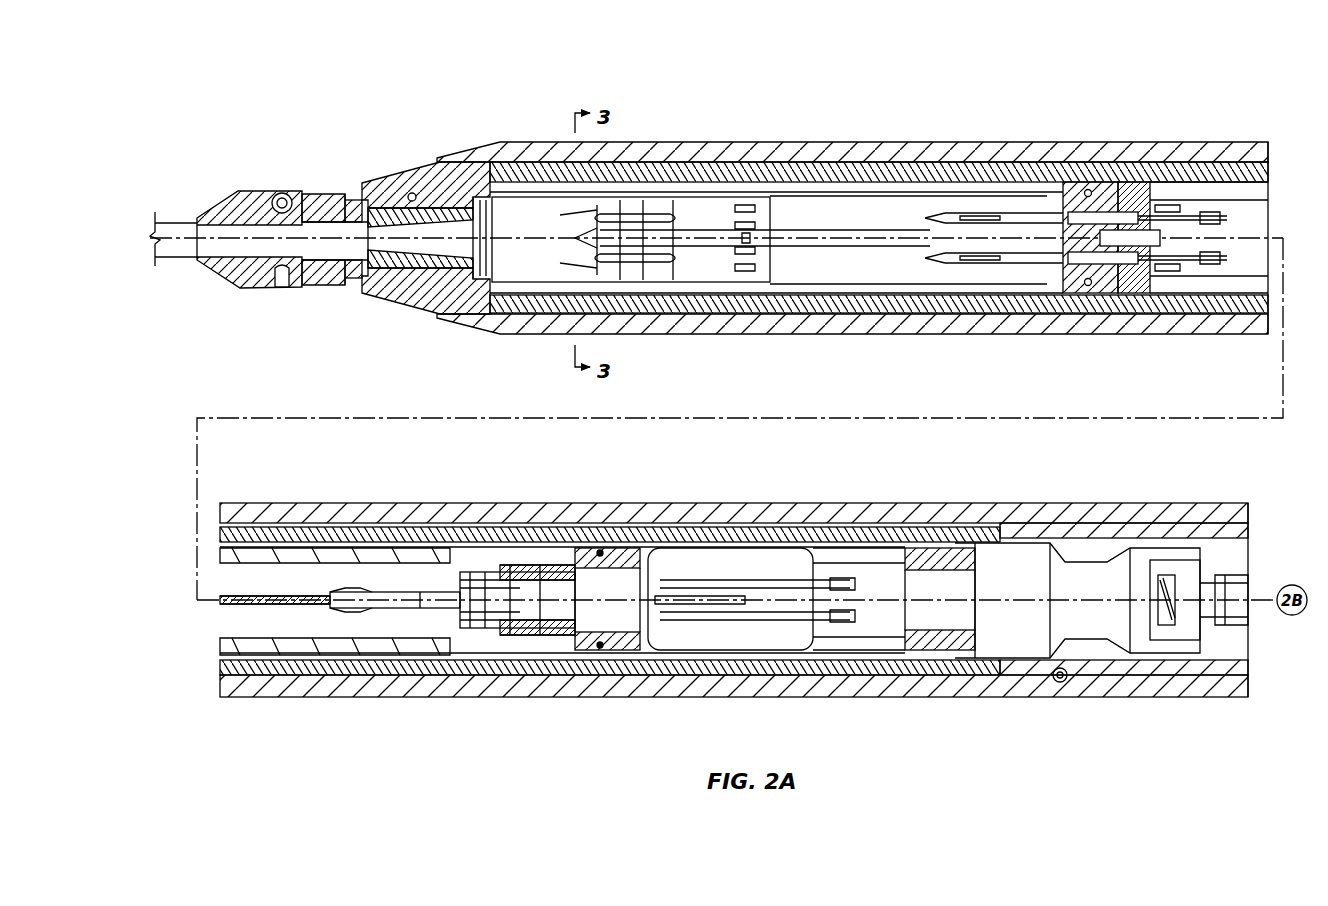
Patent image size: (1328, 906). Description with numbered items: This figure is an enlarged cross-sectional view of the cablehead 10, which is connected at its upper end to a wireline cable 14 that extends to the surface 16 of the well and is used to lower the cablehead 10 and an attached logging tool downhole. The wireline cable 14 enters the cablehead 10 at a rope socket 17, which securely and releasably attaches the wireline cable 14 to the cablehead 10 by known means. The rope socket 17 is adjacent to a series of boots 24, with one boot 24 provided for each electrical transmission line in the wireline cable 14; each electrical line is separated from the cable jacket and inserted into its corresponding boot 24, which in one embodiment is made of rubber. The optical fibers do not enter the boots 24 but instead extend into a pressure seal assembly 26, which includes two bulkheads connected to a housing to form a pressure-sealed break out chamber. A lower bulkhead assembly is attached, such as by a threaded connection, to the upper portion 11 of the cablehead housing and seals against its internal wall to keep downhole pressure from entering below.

The cablehead 10 is at (226, 98).
The upper portion of the cablehead housing 11 is at (1228, 498).
The wireline cable 14 is at (178, 222).
The surface 16 is at (468, 196).
The rope socket 17 is at (418, 193).
The boot 24 is at (722, 210).
The pressure seal assembly 26 is at (1268, 126).